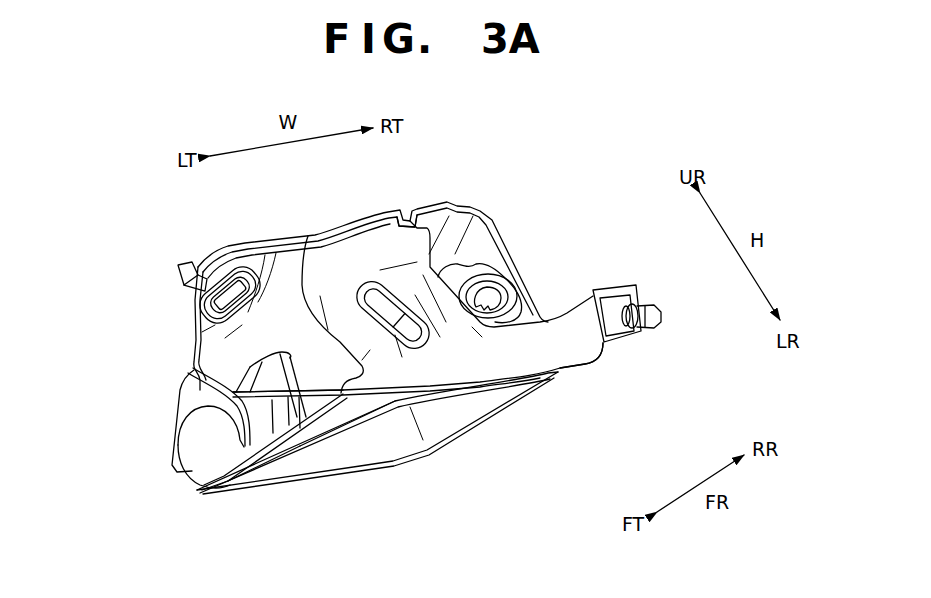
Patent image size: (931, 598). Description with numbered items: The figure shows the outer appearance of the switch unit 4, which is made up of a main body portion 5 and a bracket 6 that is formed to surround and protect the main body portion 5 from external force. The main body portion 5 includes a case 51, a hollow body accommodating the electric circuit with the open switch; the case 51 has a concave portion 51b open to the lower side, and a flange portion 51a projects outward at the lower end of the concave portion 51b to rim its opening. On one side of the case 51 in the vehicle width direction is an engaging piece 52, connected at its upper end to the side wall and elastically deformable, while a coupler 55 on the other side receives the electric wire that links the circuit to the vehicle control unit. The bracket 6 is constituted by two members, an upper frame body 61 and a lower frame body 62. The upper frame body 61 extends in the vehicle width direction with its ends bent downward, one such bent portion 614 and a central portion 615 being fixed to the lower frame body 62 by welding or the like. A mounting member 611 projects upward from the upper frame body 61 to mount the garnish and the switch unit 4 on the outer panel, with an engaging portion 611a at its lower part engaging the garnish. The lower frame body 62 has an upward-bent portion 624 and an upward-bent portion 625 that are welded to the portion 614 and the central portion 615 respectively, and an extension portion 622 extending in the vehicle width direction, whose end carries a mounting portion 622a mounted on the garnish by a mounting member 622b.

The switch unit 4 is at (640, 150).
The main body portion 5 is at (528, 416).
The bracket 6 is at (155, 499).
The case 51 is at (317, 462).
The flange portion 51a is at (486, 426).
The concave portion 51b is at (405, 430).
The engaging piece 52 is at (282, 460).
The coupler 55 is at (500, 281).
The upper frame body 61 is at (475, 211).
The mounting member 611 is at (175, 263).
The engaging portion 611a is at (192, 310).
The portion bent downward 614 is at (208, 396).
The central portion 615 is at (349, 238).
The lower frame body 62 is at (220, 496).
The extension portion 622 is at (574, 322).
The mounting portion 622a is at (632, 368).
The mounting member 622b is at (654, 312).
The portion bent upward 624 is at (204, 449).
The portion bent upward 625 is at (396, 228).